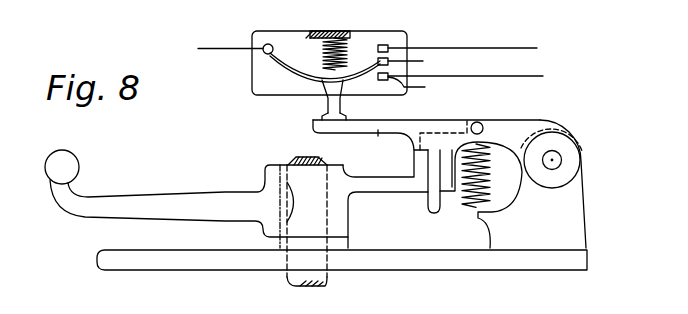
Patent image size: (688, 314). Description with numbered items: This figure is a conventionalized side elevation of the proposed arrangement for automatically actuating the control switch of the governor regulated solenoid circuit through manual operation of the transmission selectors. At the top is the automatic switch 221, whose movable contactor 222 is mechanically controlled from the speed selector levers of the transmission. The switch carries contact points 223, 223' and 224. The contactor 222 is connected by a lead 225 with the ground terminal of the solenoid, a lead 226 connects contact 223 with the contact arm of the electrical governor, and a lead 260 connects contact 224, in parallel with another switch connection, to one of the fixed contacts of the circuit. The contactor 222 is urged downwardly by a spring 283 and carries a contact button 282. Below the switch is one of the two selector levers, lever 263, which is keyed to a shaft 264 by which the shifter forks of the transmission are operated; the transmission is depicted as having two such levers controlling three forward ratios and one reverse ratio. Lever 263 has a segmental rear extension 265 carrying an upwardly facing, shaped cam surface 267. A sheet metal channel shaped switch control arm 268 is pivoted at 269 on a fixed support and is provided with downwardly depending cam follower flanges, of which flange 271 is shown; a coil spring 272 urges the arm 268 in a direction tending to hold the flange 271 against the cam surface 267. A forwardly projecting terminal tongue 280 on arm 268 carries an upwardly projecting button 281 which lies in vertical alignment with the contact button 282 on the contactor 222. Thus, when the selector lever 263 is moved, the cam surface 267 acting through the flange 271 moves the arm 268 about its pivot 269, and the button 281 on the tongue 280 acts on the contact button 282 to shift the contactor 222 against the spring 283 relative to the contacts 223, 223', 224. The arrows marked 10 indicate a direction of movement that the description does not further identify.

The direction of movement arrow 10 is at (410, 112).
The automatic switch 221 is at (243, 76).
The contactor 222 is at (308, 57).
The contact point 223 is at (420, 86).
The contact point 223' is at (425, 59).
The contact point 224 is at (382, 45).
The lead 225 is at (247, 48).
The lead 226 is at (535, 76).
The lead 260 is at (506, 47).
The selector lever 263 is at (184, 196).
The shaft 264 is at (303, 157).
The segmental rear extension 265 is at (367, 184).
The cam surface 267 is at (435, 184).
The switch control arm 268 is at (538, 120).
The pivot 269 is at (560, 162).
The cam follower flange 271 is at (443, 182).
The coil spring 272 is at (492, 190).
The terminal tongue 280 is at (426, 148).
The button 281 is at (318, 119).
The contact button 282 is at (330, 107).
The spring 283 is at (317, 47).